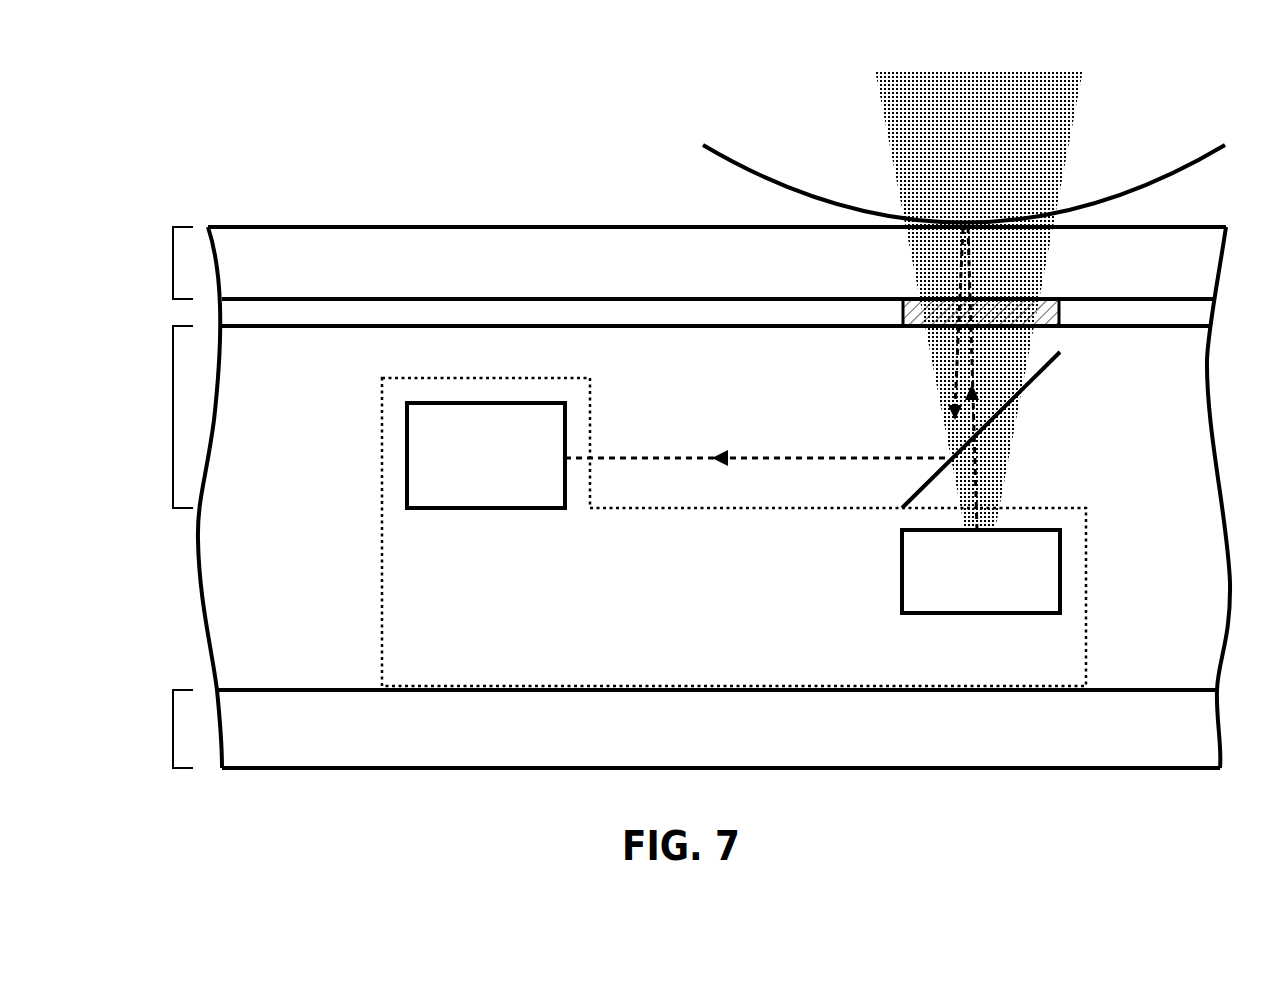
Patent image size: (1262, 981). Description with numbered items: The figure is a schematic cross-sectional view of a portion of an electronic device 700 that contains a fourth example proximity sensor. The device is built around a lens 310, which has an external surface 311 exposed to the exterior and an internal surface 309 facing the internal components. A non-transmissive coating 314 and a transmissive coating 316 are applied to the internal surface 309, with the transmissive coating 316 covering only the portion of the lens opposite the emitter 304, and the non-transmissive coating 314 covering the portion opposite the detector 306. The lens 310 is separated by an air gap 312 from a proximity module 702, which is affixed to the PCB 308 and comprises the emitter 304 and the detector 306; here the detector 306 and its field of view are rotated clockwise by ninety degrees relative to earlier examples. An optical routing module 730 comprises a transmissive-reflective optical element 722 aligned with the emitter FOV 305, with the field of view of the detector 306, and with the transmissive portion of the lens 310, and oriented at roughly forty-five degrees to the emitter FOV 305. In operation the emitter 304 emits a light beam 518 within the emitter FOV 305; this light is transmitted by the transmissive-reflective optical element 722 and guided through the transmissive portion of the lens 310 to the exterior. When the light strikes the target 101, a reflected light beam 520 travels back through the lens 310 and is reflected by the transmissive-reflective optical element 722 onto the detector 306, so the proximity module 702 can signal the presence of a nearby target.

The electronic device 700 is at (293, 825).
The target 101 is at (1204, 148).
The emitter FOV 305 is at (1052, 239).
The lens 310 is at (674, 263).
The external surface 311 is at (342, 230).
The internal surface 309 is at (344, 296).
The air gap 312 is at (641, 385).
The non-transmissive coating 314 is at (538, 314).
The PCB 308 is at (128, 733).
The transmissive coating 316 is at (1038, 313).
The proximity module 702 is at (624, 656).
The detector 306 is at (467, 453).
The emitter 304 is at (962, 569).
The transmissive-reflective optical element 722 is at (1003, 403).
The light beam 520 is at (957, 284).
The light beam 518 is at (980, 470).
The optical routing module 730 is at (872, 407).